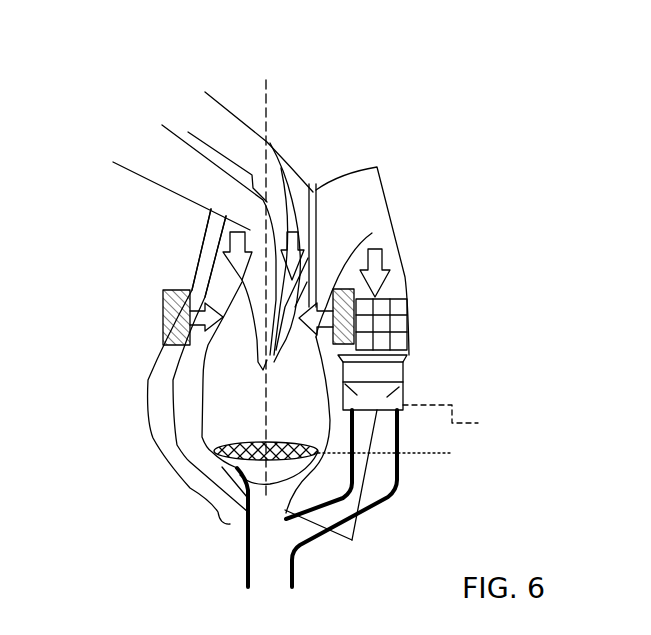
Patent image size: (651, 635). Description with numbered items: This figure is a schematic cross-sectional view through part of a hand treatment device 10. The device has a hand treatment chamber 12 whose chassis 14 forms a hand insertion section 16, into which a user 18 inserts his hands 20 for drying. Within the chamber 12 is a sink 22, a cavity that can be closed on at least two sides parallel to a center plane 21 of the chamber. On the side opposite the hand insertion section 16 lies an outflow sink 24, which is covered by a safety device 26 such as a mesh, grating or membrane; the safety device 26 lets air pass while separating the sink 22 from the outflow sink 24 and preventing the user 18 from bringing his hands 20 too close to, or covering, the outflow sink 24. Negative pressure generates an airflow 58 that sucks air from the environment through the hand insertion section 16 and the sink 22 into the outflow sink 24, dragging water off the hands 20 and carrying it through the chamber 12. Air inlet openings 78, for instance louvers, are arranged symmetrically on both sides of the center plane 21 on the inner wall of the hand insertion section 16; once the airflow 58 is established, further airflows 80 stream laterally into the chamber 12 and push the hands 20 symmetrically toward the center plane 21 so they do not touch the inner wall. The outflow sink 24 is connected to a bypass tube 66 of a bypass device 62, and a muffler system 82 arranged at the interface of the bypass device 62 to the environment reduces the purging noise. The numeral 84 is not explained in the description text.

The hand treatment device 10 is at (405, 140).
The hand treatment chamber 12 is at (403, 180).
The chassis 14 is at (150, 433).
The hand insertion section 16 is at (320, 240).
The user 18 is at (152, 103).
The hands 20 is at (222, 118).
The center plane 21 is at (268, 102).
The sink 22 is at (222, 400).
The outflow sink 24 is at (230, 524).
The safety device 26 is at (212, 450).
The airflow 58 is at (225, 220).
The bypass device 62 is at (408, 374).
The bypass tube 66 is at (352, 542).
The air inlet openings 78 is at (163, 328).
The further airflows 80 is at (190, 285).
The muffler system 82 is at (406, 335).
The sheet mark 84 is at (605, 629).